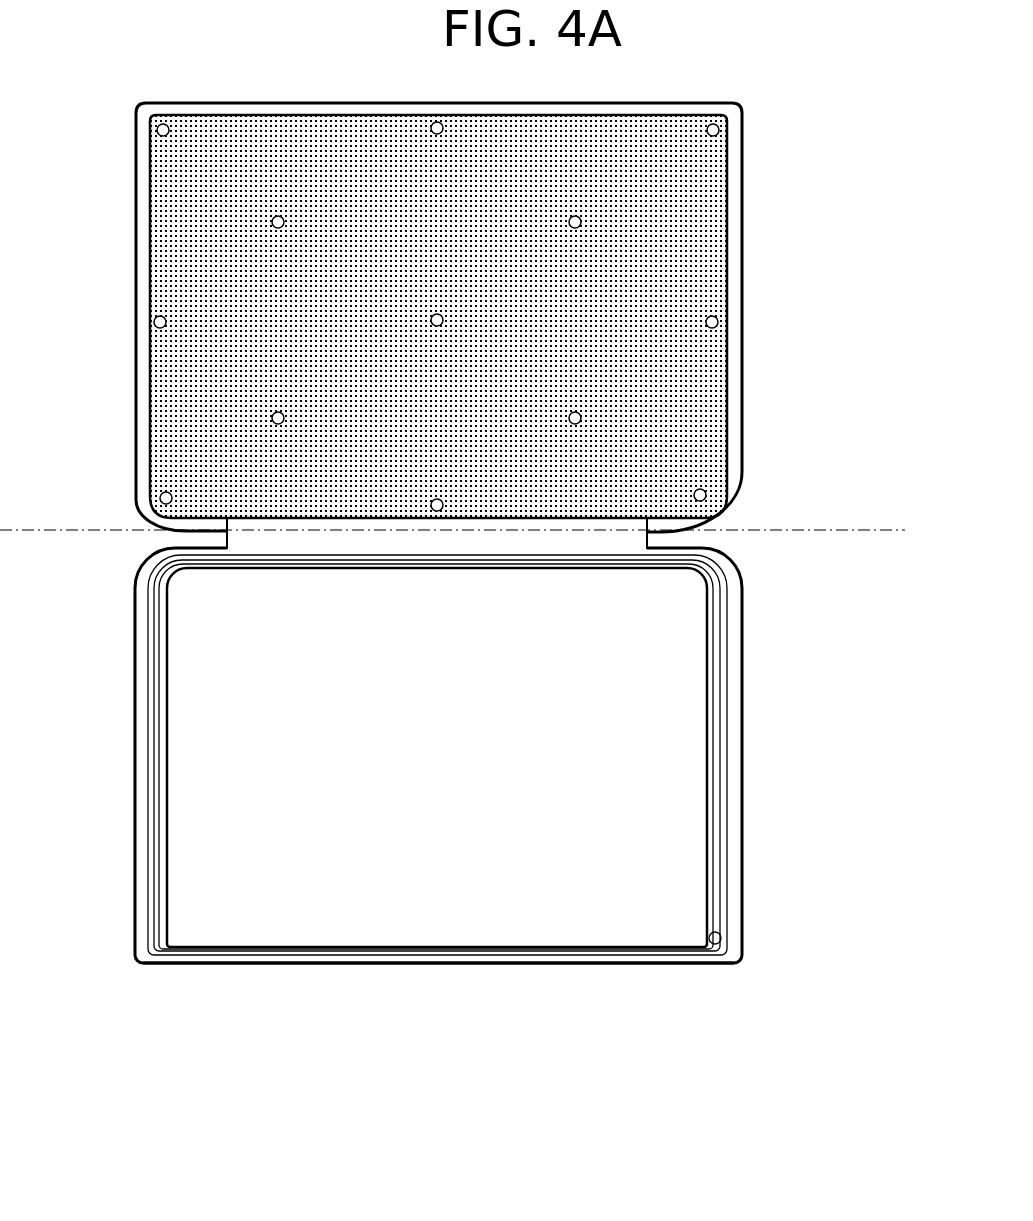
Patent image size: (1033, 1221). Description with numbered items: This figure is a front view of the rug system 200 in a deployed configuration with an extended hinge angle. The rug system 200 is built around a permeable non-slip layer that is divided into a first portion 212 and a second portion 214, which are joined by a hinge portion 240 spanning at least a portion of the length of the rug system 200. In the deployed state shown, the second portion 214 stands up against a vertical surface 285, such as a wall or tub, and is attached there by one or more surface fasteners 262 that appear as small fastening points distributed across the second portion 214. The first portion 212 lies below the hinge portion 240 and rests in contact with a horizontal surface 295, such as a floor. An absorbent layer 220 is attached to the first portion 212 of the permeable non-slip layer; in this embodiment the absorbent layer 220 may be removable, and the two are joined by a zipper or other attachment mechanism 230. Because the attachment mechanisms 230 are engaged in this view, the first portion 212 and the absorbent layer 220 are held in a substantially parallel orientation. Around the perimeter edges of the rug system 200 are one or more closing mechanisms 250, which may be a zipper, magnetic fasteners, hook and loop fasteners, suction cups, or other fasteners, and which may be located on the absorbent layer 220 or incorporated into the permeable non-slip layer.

The rug system 200 is at (462, 539).
The second portion 214 is at (270, 320).
The surface fastener 262 is at (712, 322).
The hinge portion 240 is at (245, 524).
The vertical surface 285 is at (812, 489).
The closing mechanism 250 is at (132, 653).
The absorbent layer 220 is at (243, 695).
The attachment mechanism 230 is at (715, 873).
The first portion 212 is at (368, 958).
The horizontal surface 295 is at (665, 1028).